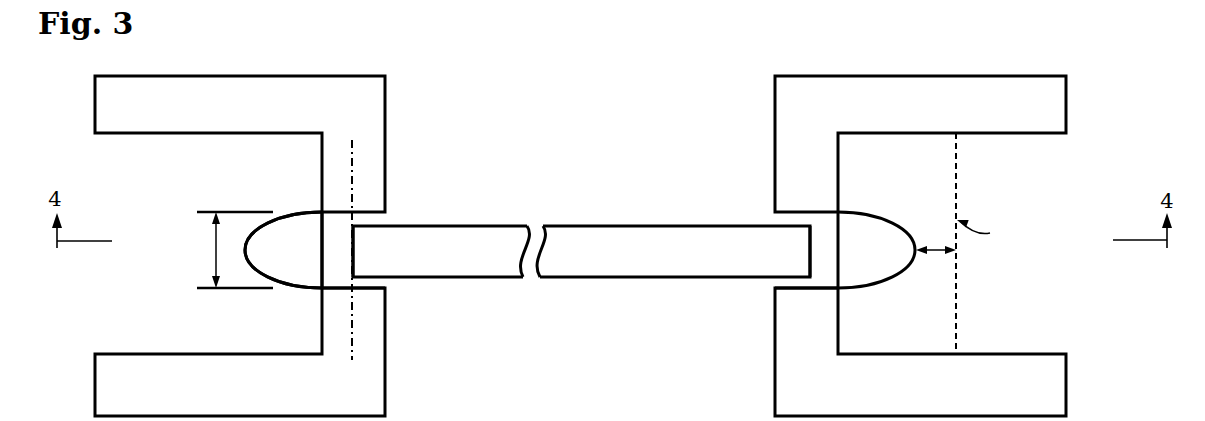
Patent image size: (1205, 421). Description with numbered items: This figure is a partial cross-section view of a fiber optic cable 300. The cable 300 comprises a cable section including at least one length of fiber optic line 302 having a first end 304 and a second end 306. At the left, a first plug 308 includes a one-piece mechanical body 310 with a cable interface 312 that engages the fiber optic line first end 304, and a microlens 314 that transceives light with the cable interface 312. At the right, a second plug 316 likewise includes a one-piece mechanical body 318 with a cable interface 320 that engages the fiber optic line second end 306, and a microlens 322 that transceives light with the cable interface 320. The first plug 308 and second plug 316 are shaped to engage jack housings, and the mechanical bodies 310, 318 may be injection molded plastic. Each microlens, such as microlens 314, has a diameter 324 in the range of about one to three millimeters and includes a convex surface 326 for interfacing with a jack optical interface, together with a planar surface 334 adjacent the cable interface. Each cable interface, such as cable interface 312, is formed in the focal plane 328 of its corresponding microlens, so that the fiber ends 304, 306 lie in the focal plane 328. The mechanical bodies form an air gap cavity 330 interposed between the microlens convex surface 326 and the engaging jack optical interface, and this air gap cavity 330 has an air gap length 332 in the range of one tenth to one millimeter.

The fiber optic cable 300 is at (1063, 41).
The fiber optic line 302 is at (580, 226).
The first end 304 is at (410, 263).
The second end 306 is at (785, 263).
The first plug 308 is at (351, 61).
The one-piece mechanical body 310 is at (288, 114).
The cable interface 312 is at (333, 276).
The microlens 314 is at (311, 226).
The second plug 316 is at (832, 60).
The one-piece mechanical body 318 is at (953, 119).
The cable interface 320 is at (823, 275).
The microlens 322 is at (895, 262).
The diameter 324 is at (214, 250).
The convex surface 326 is at (253, 257).
The focal plane 328 is at (139, 138).
The air gap cavity 330 is at (910, 194).
The air gap length 332 is at (935, 255).
The planar surface 334 is at (317, 245).